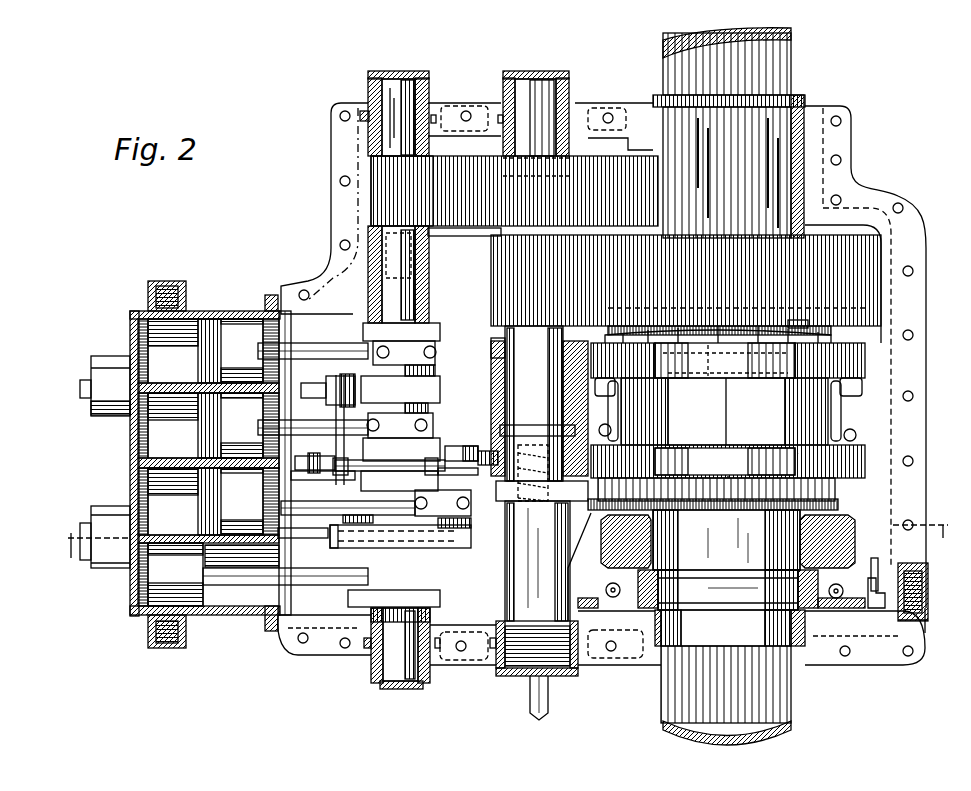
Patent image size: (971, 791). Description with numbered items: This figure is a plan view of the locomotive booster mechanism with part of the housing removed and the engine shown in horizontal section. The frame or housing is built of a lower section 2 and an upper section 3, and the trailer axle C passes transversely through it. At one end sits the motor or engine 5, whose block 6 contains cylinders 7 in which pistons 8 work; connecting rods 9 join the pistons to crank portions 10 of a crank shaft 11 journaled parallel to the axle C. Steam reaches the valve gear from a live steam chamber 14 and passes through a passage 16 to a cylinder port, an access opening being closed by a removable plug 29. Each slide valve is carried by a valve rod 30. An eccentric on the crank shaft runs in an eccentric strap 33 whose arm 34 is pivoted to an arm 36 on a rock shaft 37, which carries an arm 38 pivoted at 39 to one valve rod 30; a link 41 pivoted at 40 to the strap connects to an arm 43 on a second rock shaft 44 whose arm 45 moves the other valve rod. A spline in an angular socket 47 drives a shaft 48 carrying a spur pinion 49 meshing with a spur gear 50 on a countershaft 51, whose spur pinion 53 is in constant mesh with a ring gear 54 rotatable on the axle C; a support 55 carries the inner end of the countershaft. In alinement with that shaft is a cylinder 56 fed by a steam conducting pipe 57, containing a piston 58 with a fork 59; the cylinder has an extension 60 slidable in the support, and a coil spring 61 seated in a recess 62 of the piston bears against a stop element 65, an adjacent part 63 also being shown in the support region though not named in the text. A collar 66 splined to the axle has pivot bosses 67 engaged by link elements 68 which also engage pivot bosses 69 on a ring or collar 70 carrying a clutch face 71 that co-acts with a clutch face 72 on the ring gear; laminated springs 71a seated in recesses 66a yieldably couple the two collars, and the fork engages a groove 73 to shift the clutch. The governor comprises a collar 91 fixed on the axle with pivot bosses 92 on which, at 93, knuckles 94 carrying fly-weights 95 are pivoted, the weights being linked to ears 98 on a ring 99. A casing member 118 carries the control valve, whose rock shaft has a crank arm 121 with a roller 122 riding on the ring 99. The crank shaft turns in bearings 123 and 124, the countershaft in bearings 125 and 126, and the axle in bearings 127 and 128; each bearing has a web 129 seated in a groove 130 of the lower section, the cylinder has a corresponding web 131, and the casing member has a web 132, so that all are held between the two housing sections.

The housing section 2 is at (862, 232).
The housing section 3 is at (502, 537).
The motor or engine 5 is at (205, 461).
The block 6 is at (185, 305).
The cylinders 7 is at (128, 345).
The pistons 8 is at (208, 462).
The connecting rods 9 is at (306, 340).
The crank portions 10 is at (305, 540).
The crank shaft 11 is at (356, 308).
The live steam chamber 14 is at (160, 282).
The passage 16 is at (110, 386).
The removable plug 29 is at (75, 395).
The valve rod 30 is at (292, 380).
The eccentric strap or carriage 33 is at (389, 444).
The arm 34 is at (313, 455).
The arm 36 is at (325, 478).
The rock shaft 37 is at (399, 481).
The arm 38 is at (400, 389).
The pivot connection 39 is at (329, 429).
The pivot connection 40 is at (455, 440).
The link 41 is at (445, 462).
The arm 43 is at (492, 478).
The rock shaft 44 is at (470, 540).
The arm 45 is at (443, 540).
The angular socket 47 is at (352, 250).
The shaft 48 is at (402, 92).
The spur pinion 49 is at (378, 200).
The spur gear 50 is at (466, 152).
The countershaft 51 is at (483, 232).
The spur pinion 53 is at (497, 267).
The ring gear 54 is at (705, 234).
The support 55 is at (483, 380).
The cylinder 56 is at (492, 666).
The steam conducting pipe 57 is at (521, 690).
The piston 58 is at (515, 625).
The fork 59 is at (726, 540).
The extension 60 is at (488, 452).
The coil spring 61 is at (528, 440).
The socket or recess 62 is at (498, 510).
The bushing 63 is at (557, 380).
The stop element 65 is at (520, 417).
The collar 66 is at (850, 448).
The recesses 66a is at (748, 448).
The pivot bosses 67 is at (597, 418).
The link elements 68 is at (604, 400).
The pivot bosses 69 is at (850, 382).
The ring or collar 70 is at (698, 352).
The clutch face 71 is at (840, 343).
The springs 71a is at (650, 390).
The clutch face 72 is at (800, 316).
The groove 73 is at (830, 488).
The collar 91 is at (596, 578).
The pivot bosses 92 is at (726, 600).
The pivot 93 is at (728, 590).
The knuckles 94 is at (832, 576).
The fly-weights 95 is at (600, 545).
The ears 98 is at (598, 606).
The ring 99 is at (848, 600).
The casing member 118 is at (911, 534).
The crank arm 121 is at (920, 572).
The roller 122 is at (863, 556).
The bearing 123 is at (412, 70).
The bearing 124 is at (421, 300).
The bearing 125 is at (555, 64).
The bearing 126 is at (483, 350).
The bearing 127 is at (796, 150).
The bearing 128 is at (640, 656).
The web 129 is at (368, 90).
The groove 130 is at (352, 105).
The web or rib 131 is at (485, 645).
The web 132 is at (912, 622).
The axle C is at (715, 25).